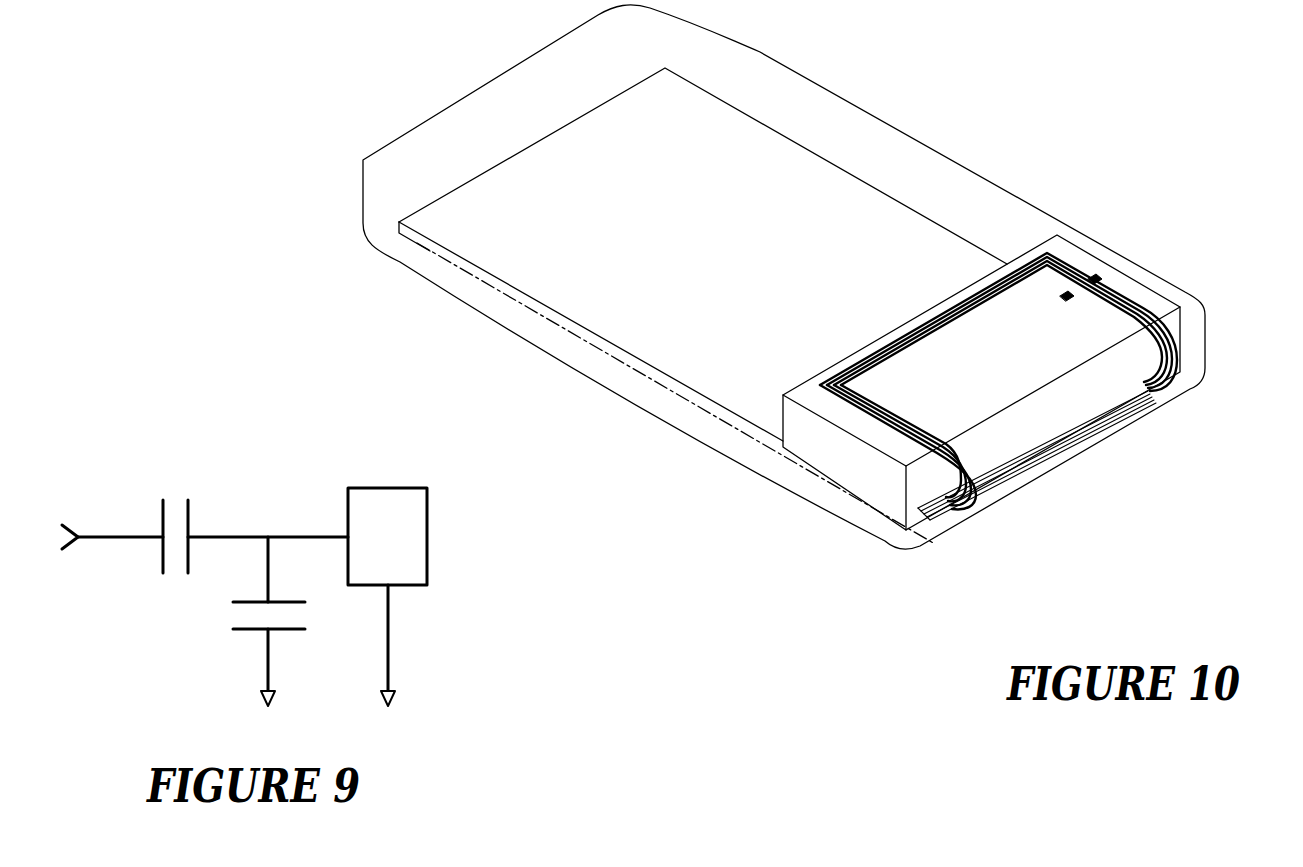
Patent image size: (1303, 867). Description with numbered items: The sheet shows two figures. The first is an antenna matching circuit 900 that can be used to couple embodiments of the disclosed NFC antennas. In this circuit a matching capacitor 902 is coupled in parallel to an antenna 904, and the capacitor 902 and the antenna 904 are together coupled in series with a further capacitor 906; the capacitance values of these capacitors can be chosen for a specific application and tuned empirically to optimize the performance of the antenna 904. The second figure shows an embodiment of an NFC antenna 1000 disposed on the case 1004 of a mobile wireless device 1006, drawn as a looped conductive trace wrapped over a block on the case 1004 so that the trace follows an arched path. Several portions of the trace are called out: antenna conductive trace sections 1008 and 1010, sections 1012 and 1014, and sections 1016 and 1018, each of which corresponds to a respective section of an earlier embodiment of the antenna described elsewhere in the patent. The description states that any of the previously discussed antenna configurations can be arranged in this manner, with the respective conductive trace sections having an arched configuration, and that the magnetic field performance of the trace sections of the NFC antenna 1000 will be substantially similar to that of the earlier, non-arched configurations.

In FIG. 9, the antenna matching circuit 900 is at (477, 652).
In FIG. 9, the matching capacitor 902 is at (251, 633).
In FIG. 9, the antenna 904 is at (428, 546).
In FIG. 9, the capacitor 906 is at (160, 522).
In FIG. 10, the NFC antenna 1000 is at (1172, 381).
In FIG. 10, the case 1004 is at (1011, 183).
In FIG. 10, the mobile wireless device 1006 is at (947, 107).
In FIG. 10, the antenna conductive trace section 1008 is at (923, 300).
In FIG. 10, the antenna conductive trace section 1010 is at (1073, 477).
In FIG. 10, the antenna conductive trace section 1012 is at (1145, 300).
In FIG. 10, the antenna conductive trace section 1014 is at (885, 442).
In FIG. 10, the antenna conductive trace section 1016 is at (1197, 350).
In FIG. 10, the antenna conductive trace section 1018 is at (983, 480).